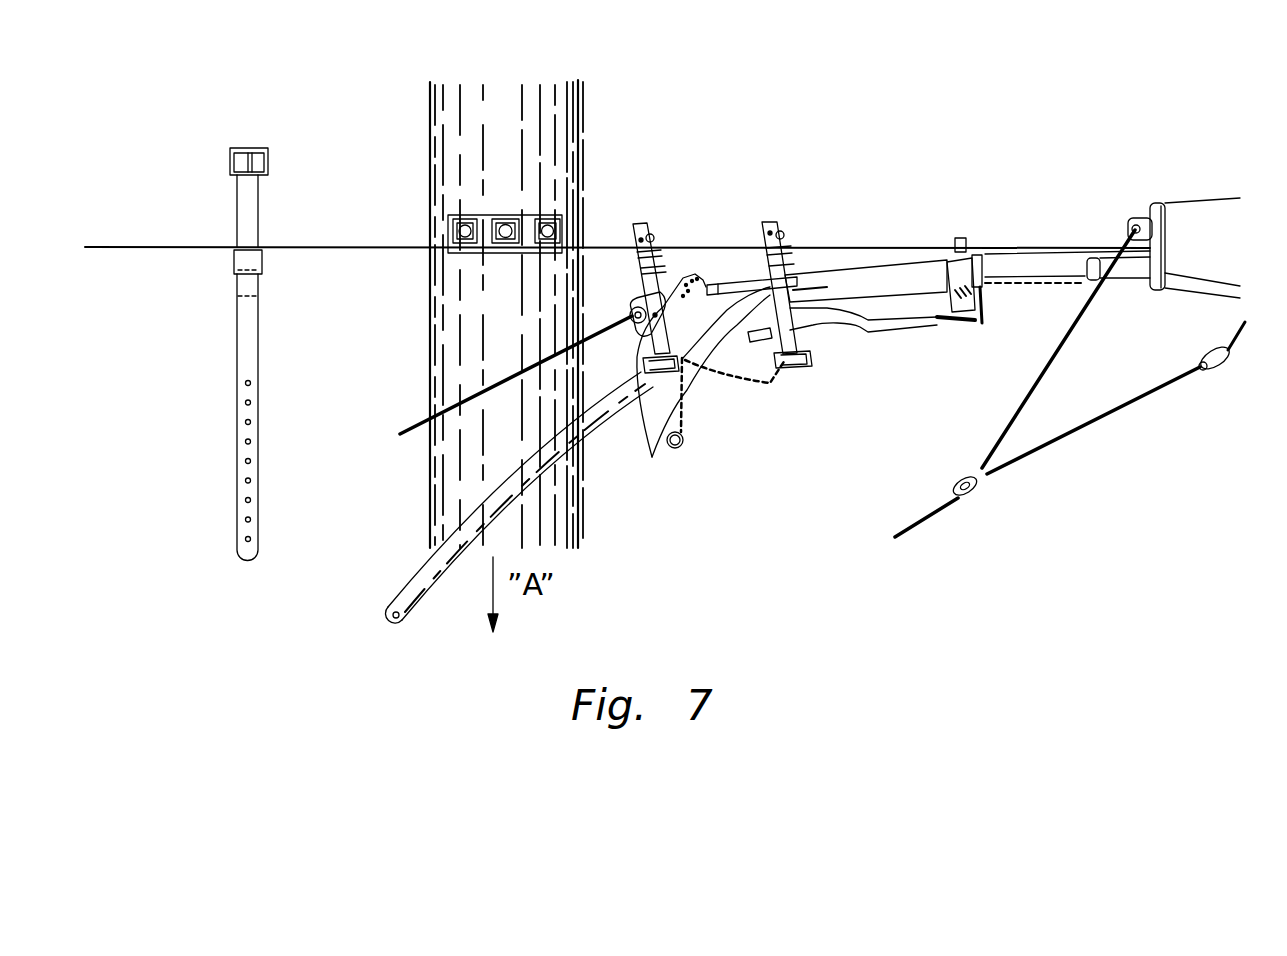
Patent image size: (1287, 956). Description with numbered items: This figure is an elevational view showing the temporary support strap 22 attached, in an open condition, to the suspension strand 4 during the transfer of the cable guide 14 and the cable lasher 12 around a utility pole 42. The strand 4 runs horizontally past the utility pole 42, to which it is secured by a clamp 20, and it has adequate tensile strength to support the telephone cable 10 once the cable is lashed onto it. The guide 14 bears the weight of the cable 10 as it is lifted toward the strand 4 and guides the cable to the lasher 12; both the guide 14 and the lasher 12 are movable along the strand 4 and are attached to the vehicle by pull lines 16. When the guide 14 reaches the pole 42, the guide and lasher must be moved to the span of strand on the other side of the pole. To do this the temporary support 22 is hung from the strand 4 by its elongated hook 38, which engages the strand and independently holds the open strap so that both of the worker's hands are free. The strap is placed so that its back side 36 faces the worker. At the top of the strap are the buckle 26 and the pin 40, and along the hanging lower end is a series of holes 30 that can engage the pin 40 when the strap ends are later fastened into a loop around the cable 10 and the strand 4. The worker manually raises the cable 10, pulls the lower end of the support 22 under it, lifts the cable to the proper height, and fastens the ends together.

The suspension strand 4 is at (138, 245).
The telephone cable 10 is at (410, 585).
The cable lasher 12 is at (1200, 205).
The cable guide 14 is at (862, 275).
The pull lines 16 is at (418, 418).
The clamp 20 is at (479, 217).
The temporary support strap 22 is at (235, 309).
The buckle 26 is at (266, 175).
The holes 30 is at (247, 422).
The back side 36 is at (238, 338).
The hook 38 is at (235, 250).
The pin 40 is at (253, 150).
The utility pole 42 is at (574, 114).